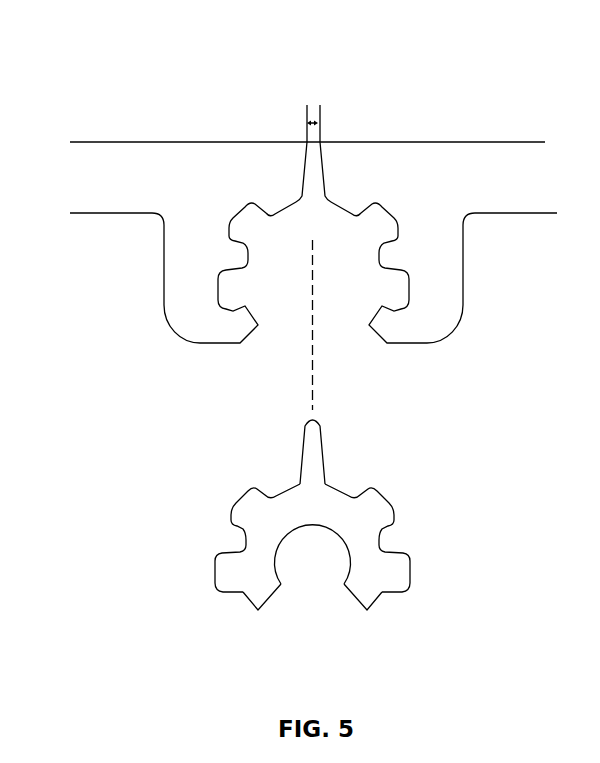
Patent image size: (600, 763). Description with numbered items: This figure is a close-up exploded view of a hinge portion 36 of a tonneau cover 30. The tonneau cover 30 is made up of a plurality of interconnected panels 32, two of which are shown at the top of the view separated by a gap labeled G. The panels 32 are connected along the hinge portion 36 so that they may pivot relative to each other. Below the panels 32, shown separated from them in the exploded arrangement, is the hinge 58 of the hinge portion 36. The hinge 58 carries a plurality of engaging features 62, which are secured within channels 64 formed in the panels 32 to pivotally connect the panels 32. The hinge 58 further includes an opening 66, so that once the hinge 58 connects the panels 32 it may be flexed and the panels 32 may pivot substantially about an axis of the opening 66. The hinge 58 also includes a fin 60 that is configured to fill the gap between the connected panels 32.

The tonneau cover 30 is at (108, 69).
The panels 32 is at (180, 157).
The hinge portion 36 is at (143, 389).
The hinge 58 is at (362, 588).
The fin 60 is at (313, 442).
The engaging features 62 is at (247, 502).
The channels 64 is at (238, 216).
The opening 66 is at (306, 558).